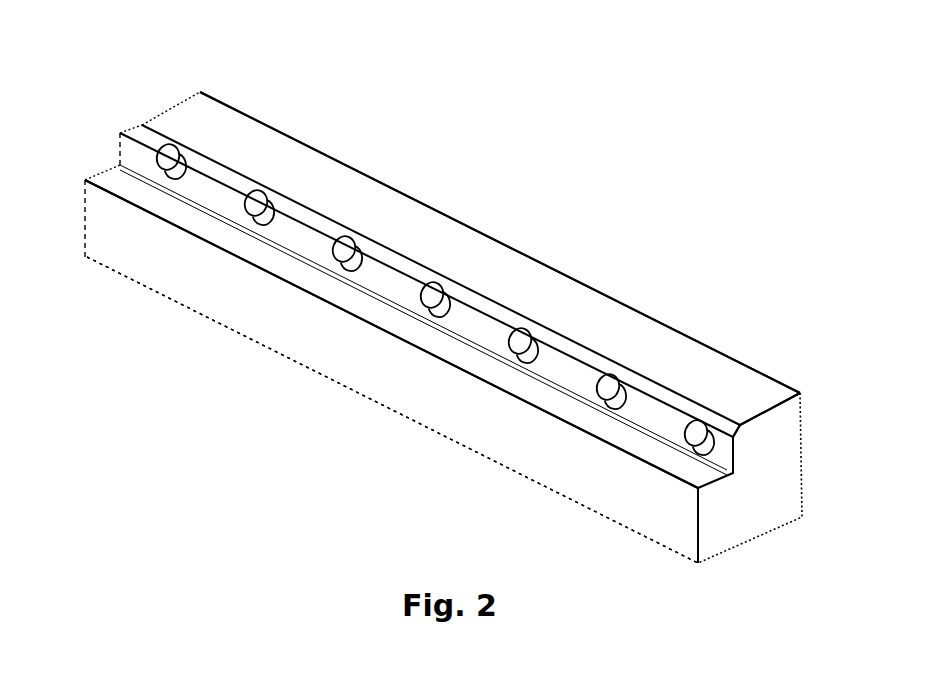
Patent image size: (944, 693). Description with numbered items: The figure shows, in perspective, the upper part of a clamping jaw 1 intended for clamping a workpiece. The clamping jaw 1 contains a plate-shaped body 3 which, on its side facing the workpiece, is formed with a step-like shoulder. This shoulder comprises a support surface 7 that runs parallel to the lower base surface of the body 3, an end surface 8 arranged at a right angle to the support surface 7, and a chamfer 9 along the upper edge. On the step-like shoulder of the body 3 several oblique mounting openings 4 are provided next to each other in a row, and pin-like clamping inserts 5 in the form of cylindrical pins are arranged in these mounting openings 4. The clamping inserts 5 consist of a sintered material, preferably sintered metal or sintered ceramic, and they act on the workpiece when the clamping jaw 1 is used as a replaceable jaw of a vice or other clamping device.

The clamping jaw 1 is at (561, 229).
The body 3 is at (441, 240).
The mounting openings 4 is at (345, 250).
The clamping inserts 5 is at (344, 243).
The support surface 7 is at (453, 352).
The end surface 8 is at (658, 413).
The chamfer 9 is at (206, 165).